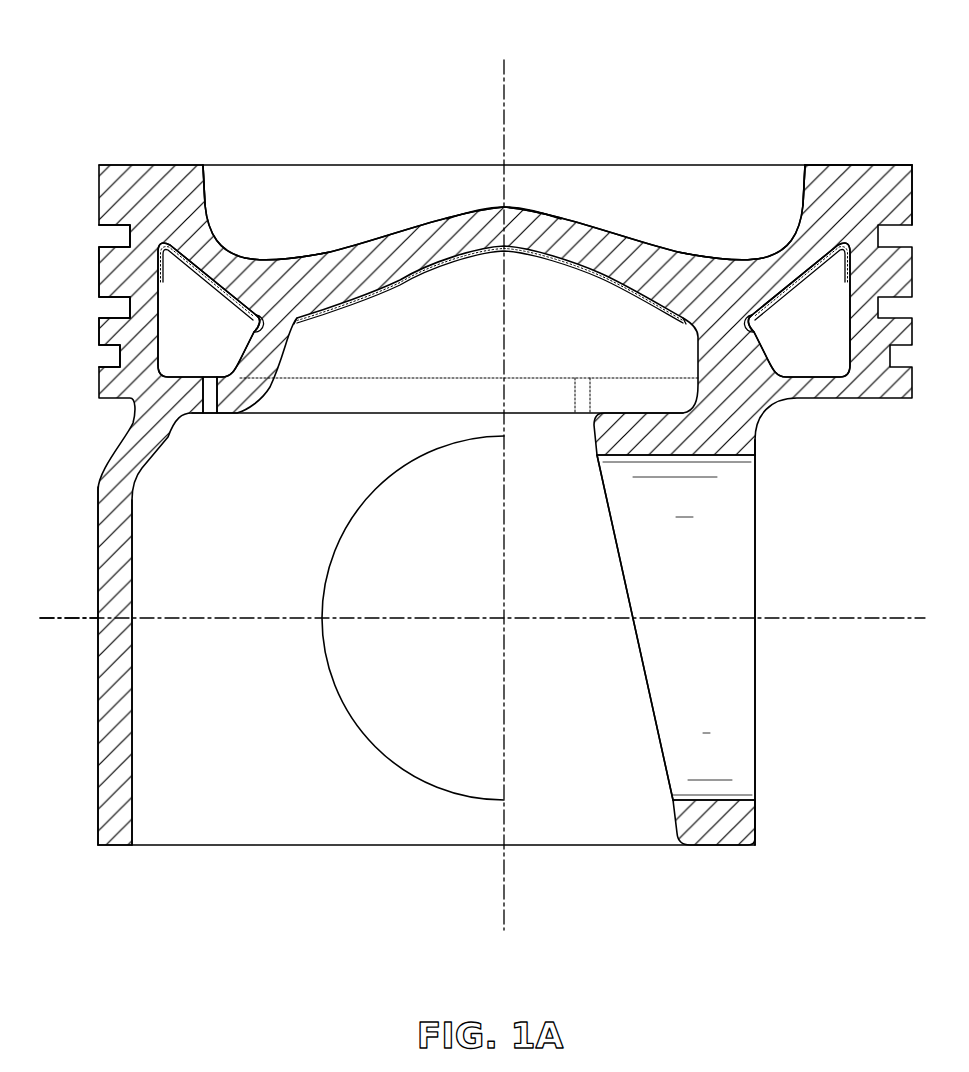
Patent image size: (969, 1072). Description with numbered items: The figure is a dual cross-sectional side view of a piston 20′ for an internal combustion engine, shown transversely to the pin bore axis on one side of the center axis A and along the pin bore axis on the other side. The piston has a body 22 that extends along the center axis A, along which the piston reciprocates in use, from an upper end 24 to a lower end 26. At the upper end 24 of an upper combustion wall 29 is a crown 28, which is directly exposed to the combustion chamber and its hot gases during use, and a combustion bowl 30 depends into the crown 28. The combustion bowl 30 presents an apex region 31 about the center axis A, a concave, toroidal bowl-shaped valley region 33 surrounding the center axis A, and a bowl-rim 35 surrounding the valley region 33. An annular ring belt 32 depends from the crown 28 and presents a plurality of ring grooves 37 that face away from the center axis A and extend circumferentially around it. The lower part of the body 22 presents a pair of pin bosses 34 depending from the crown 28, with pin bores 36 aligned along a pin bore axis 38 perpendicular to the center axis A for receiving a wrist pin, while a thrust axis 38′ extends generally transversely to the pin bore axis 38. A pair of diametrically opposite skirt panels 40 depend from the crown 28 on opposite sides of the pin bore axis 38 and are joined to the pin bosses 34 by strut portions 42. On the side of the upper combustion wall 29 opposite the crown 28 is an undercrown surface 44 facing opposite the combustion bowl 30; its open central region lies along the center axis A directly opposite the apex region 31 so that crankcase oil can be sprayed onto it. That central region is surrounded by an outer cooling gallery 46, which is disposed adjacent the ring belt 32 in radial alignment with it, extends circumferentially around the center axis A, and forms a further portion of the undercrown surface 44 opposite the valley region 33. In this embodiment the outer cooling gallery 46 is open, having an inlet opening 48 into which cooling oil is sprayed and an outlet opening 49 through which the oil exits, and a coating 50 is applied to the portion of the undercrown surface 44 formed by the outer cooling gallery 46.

The piston 20′ is at (744, 101).
The center axis A is at (507, 112).
The body 22 is at (876, 170).
The upper end 24 is at (903, 165).
The lower end 26 is at (752, 848).
The crown 28 is at (150, 160).
The upper combustion wall 29 is at (204, 215).
The combustion bowl 30 is at (671, 182).
The apex region 31 is at (557, 201).
The annular ring belt 32 is at (62, 223).
The valley region 33 is at (230, 245).
The pin bosses 34 is at (482, 828).
The bowl-rim 35 is at (203, 165).
The pin bores 36 is at (383, 752).
The ring grooves 37 is at (112, 243).
The pin bore axis 38 is at (882, 612).
The thrust axis 38′ is at (62, 613).
The skirt panels 40 is at (97, 751).
The strut portions 42 is at (255, 826).
The undercrown surface 44 is at (240, 316).
The outer cooling gallery 46 is at (178, 370).
The inlet opening 48 is at (210, 406).
The outlet opening 49 is at (575, 388).
The coating 50 is at (189, 258).